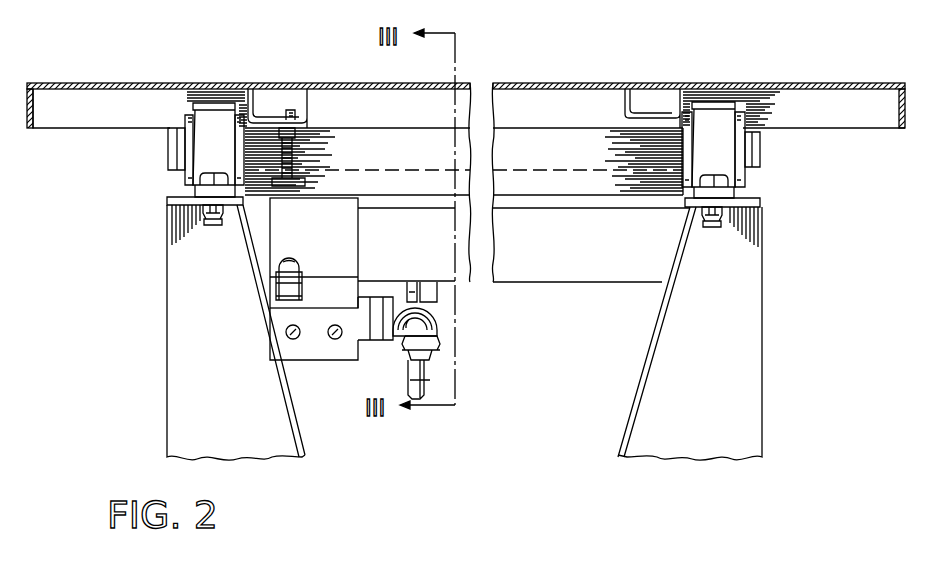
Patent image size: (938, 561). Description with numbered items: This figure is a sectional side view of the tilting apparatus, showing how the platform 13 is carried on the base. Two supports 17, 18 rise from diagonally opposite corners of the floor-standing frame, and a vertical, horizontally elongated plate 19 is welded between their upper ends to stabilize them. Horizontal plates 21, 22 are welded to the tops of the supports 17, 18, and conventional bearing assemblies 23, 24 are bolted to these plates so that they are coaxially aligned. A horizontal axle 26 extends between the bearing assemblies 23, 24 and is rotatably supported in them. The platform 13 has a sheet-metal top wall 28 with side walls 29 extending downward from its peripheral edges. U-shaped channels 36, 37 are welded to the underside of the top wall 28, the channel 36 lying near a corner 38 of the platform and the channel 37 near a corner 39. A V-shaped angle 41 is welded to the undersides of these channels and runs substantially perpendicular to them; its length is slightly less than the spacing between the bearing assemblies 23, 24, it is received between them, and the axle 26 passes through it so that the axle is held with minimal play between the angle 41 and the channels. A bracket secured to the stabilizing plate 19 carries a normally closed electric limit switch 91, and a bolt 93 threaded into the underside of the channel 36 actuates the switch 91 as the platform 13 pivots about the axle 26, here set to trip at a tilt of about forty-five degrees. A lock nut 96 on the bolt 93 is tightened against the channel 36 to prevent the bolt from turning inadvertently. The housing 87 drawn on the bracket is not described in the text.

The platform 13 is at (852, 80).
The support 17 is at (188, 340).
The support 18 is at (738, 360).
The plate 19 is at (617, 268).
The horizontal plate 21 is at (171, 201).
The horizontal plate 22 is at (758, 200).
The bearing assembly 23 is at (210, 158).
The bearing assembly 24 is at (723, 160).
The horizontal axle 26 is at (170, 148).
The top wall 28 is at (89, 83).
The side wall 29 is at (54, 120).
The U-shaped channel 36 is at (305, 105).
The U-shaped channel 37 is at (622, 103).
The corner 38 is at (26, 90).
The corner 39 is at (906, 93).
The V-shaped angle 41 is at (570, 183).
The sensor housing 87 is at (330, 236).
The limit switch 91 is at (315, 336).
The bolt 93 is at (297, 161).
The lock nut 96 is at (297, 131).